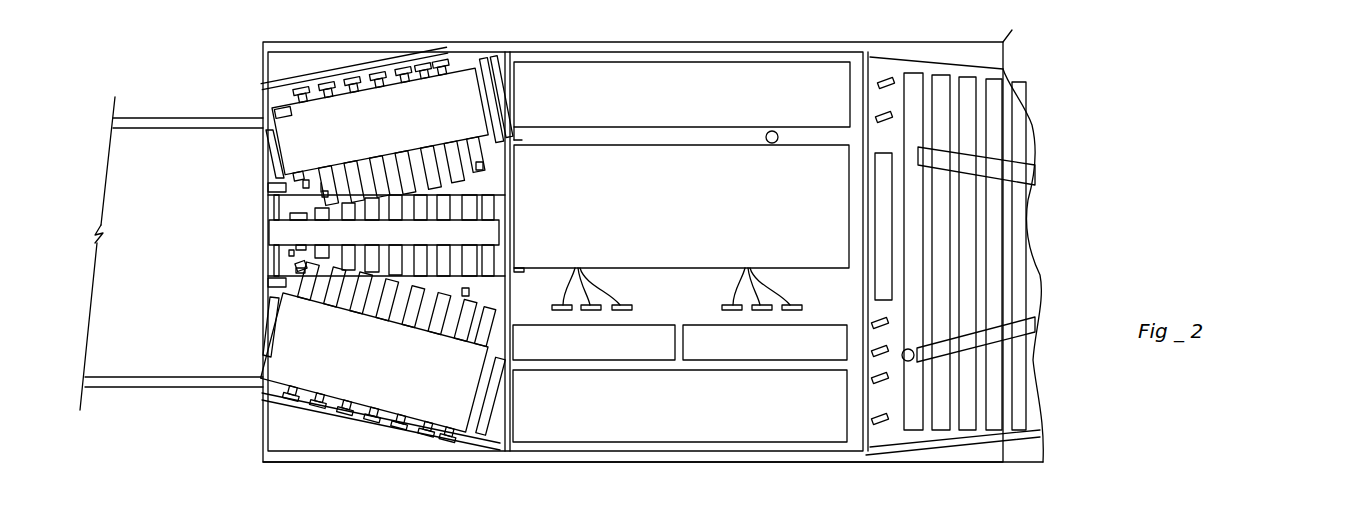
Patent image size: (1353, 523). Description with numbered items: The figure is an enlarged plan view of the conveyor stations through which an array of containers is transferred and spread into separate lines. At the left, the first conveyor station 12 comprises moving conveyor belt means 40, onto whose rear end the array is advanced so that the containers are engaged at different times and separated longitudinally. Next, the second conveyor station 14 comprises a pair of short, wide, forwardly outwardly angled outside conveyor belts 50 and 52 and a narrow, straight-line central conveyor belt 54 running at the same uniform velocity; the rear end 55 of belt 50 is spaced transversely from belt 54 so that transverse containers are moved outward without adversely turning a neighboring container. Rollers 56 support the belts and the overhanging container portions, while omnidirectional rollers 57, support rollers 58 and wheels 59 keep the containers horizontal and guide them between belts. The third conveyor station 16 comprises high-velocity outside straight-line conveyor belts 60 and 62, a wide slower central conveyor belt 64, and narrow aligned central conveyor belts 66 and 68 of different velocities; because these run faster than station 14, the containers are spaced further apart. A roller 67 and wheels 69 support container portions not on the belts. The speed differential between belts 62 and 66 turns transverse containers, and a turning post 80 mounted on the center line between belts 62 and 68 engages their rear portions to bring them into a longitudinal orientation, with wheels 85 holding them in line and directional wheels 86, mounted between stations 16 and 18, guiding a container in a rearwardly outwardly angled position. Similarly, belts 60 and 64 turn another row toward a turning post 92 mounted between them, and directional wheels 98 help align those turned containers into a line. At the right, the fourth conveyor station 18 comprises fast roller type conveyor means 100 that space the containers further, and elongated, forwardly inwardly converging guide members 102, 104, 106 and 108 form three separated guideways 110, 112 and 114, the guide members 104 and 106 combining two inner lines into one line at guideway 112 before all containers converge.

The first conveyor station 12 is at (172, 380).
The second conveyor station 14 is at (468, 464).
The third conveyor station 16 is at (710, 462).
The fourth conveyor station 18 is at (1018, 464).
The conveyor belt means 40 is at (174, 250).
The outside conveyor belt 50 is at (397, 125).
The outside conveyor belt 52 is at (377, 367).
The central conveyor belt 54 is at (405, 245).
The rear end of belt 50 55 is at (283, 172).
The rollers 56 is at (420, 152).
The omnidirectional rollers 57 is at (325, 182).
The support rollers 58 is at (490, 66).
The wheels 59 is at (484, 167).
The outside conveyor belt 60 is at (673, 109).
The outside conveyor belt 62 is at (685, 410).
The central conveyor belt 64 is at (682, 209).
The central conveyor belt 66 is at (599, 350).
The roller 67 is at (880, 205).
The central conveyor belt 68 is at (743, 350).
The wheels 69 is at (567, 270).
The turning post 80 is at (902, 352).
The wheels 85 is at (876, 418).
The directional wheels 86 is at (878, 322).
The turning post 92 is at (773, 131).
The directional wheels 98 is at (893, 110).
The roller type conveyor means 100 is at (1002, 246).
The guide member 102 is at (1000, 70).
The guide member 104 is at (1022, 175).
The guide member 106 is at (1020, 338).
The guide member 108 is at (1035, 435).
The guideway 110 is at (1008, 118).
The guideway 112 is at (985, 227).
The guideway 114 is at (982, 393).